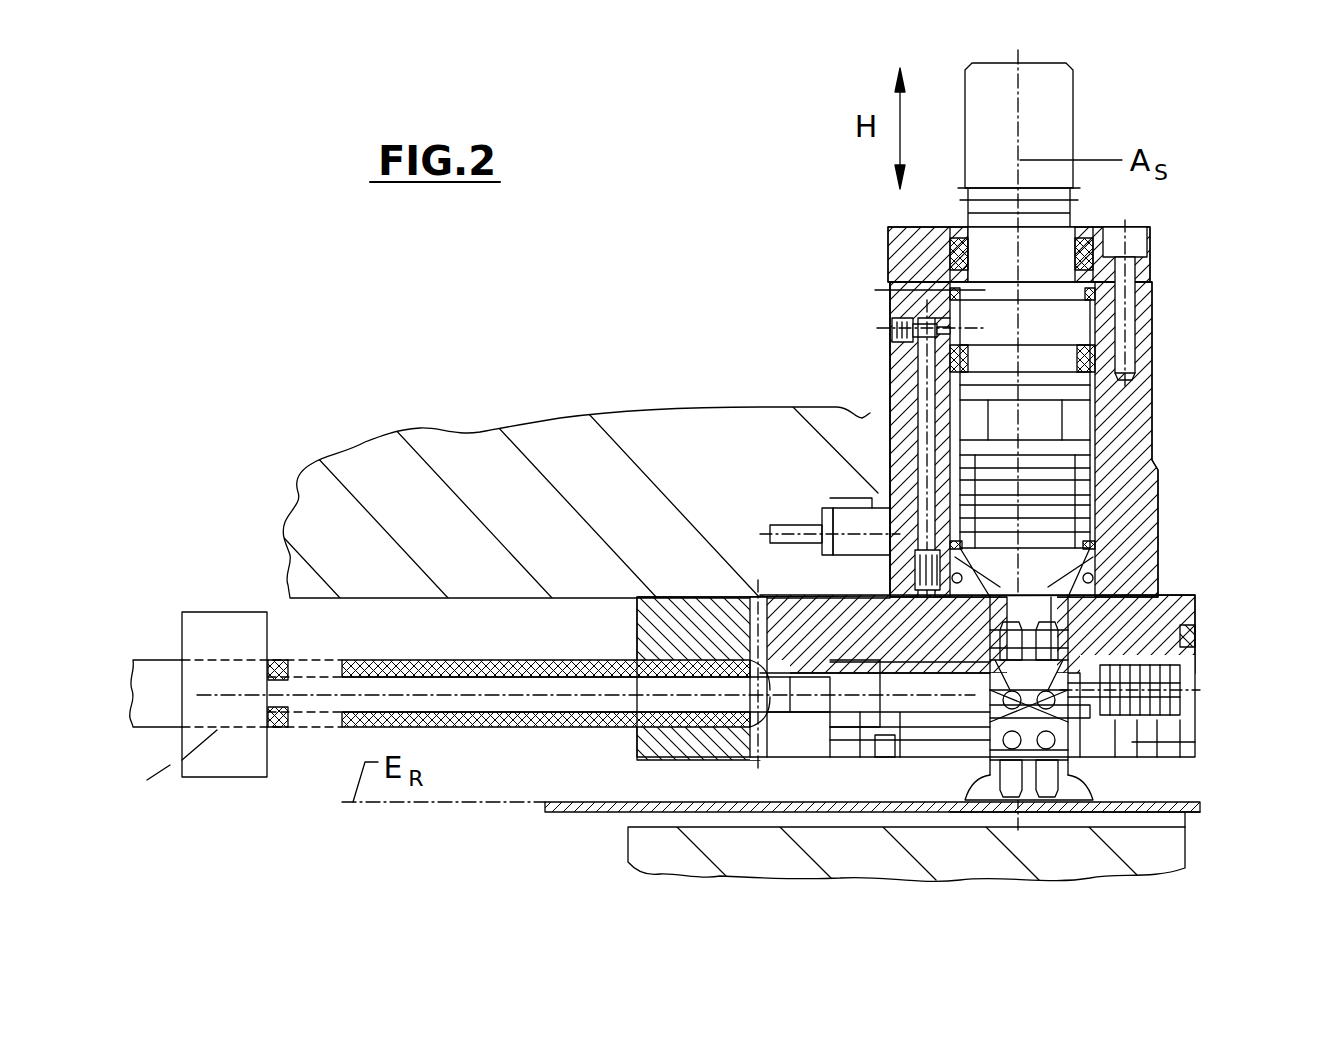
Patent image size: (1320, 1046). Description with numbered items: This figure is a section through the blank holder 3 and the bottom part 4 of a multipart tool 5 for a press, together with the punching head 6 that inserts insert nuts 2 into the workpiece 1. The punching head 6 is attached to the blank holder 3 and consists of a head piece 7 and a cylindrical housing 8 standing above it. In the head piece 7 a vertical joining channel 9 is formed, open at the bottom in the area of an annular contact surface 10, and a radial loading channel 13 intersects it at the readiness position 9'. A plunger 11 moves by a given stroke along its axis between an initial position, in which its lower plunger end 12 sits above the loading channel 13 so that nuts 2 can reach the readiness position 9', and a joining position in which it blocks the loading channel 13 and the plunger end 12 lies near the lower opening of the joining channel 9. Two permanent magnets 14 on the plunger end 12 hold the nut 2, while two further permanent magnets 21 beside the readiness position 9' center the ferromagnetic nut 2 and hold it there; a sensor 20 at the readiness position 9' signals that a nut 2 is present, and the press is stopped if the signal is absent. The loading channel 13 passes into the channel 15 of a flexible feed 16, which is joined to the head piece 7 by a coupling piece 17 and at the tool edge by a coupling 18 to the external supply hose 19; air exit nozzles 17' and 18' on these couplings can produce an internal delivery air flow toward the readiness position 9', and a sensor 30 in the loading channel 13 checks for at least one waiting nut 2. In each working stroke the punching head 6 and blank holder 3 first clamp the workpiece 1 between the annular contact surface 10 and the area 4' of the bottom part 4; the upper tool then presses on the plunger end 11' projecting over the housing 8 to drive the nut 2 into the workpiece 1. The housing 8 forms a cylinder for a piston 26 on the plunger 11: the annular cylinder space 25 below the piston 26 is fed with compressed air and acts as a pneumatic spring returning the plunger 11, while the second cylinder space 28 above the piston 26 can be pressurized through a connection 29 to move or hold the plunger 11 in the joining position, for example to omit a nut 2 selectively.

The workpiece 1 is at (872, 783).
The nut 2 is at (793, 697).
The blank holder 3 is at (522, 440).
The bottom part of the tool 4 is at (870, 854).
The area of the bottom part of the tool 4' is at (1049, 842).
The tool 5 is at (316, 408).
The punching head 6 is at (826, 342).
The head piece 7 is at (1231, 644).
The housing 8 is at (1130, 450).
The joining channel 9 is at (1046, 697).
The readiness position 9' is at (1000, 691).
The annular contact surface 10 is at (980, 780).
The plunger 11 is at (1099, 440).
The plunger end 11' is at (1061, 181).
The lower plunger end 12 is at (1119, 710).
The loading channel 13 is at (870, 690).
The permanent magnets 14 is at (1126, 689).
The channel 15 is at (366, 663).
The flexible feed 16 is at (566, 663).
The coupling piece 17 is at (739, 661).
The compressed air exit nozzle 17' is at (814, 635).
The coupling 18 is at (257, 695).
The compressed air exit nozzle 18' is at (188, 780).
The external supply hose 19 is at (543, 663).
The sensor 20 is at (1087, 688).
The permanent magnets 21 is at (1176, 750).
The cylinder space 25 is at (960, 423).
The piston 26 is at (1096, 355).
The second cylinder space 28 is at (898, 280).
The connection 29 is at (828, 505).
The sensor 30 is at (862, 752).